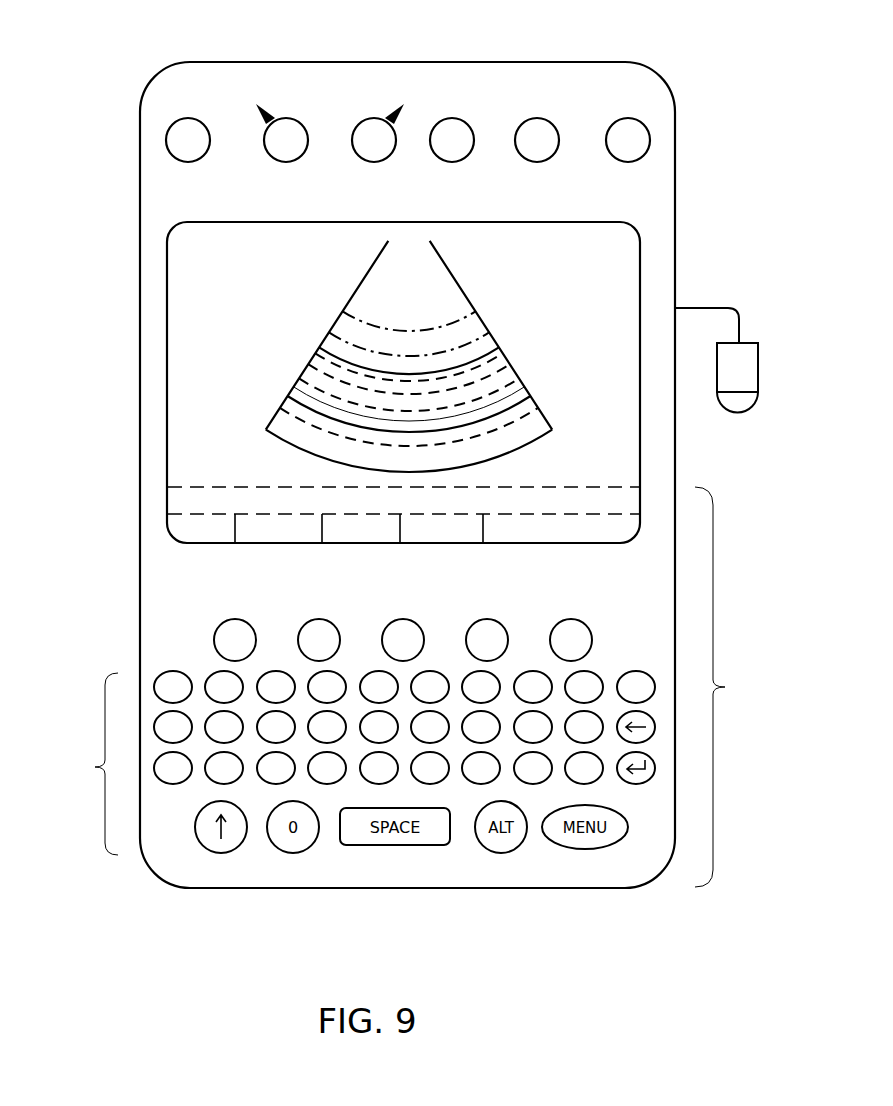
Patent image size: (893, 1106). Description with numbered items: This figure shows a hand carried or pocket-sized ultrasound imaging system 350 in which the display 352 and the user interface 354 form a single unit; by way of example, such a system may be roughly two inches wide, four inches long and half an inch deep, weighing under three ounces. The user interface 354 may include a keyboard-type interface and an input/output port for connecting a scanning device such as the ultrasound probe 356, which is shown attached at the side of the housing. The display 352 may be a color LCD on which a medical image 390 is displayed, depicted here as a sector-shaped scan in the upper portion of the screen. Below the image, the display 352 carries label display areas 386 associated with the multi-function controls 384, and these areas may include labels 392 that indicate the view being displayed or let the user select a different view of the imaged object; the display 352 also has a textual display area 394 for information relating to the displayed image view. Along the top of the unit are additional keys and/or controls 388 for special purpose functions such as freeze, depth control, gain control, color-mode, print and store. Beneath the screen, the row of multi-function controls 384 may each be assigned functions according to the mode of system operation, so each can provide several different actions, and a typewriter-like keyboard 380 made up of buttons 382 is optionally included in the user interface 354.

The pocket-sized ultrasound imaging system 350 is at (156, 58).
The display 352 is at (643, 262).
The user interface 354 is at (733, 687).
The ultrasound probe 356 is at (752, 341).
The typewriter-like keyboard 380 is at (87, 764).
The buttons 382 is at (189, 713).
The multi-function controls 384 is at (242, 622).
The label display areas 386 is at (185, 505).
The additional keys and/or controls 388 is at (192, 118).
The medical image 390 is at (342, 312).
The labels 392 is at (205, 509).
The textual display area 394 is at (212, 480).